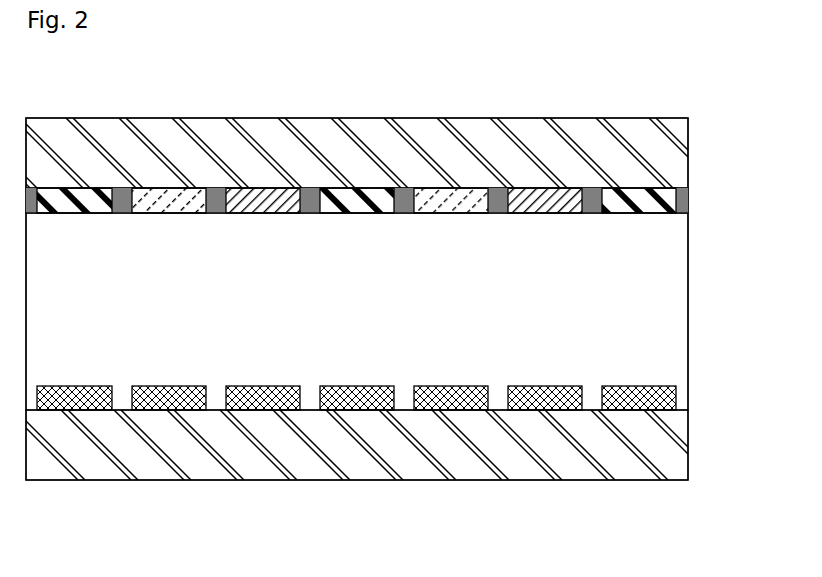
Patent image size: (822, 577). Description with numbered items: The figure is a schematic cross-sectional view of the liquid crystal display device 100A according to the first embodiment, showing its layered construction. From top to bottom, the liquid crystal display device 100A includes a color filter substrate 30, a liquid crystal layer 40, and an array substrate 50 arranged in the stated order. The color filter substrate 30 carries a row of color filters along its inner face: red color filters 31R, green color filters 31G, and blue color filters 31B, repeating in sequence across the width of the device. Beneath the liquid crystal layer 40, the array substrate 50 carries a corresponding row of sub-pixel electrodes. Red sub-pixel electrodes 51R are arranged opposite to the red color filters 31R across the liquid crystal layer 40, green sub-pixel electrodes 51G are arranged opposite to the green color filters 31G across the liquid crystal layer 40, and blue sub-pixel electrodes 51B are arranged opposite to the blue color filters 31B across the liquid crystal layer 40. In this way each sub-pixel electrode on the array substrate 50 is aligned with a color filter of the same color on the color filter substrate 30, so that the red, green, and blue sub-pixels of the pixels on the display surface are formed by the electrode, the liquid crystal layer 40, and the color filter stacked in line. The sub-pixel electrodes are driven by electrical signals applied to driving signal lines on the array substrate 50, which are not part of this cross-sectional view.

The liquid crystal display device 100A is at (784, 76).
The color filter substrate 30 is at (697, 118).
The red color filter 31R is at (68, 200).
The green color filter 31G is at (162, 200).
The blue color filter 31B is at (258, 205).
The liquid crystal layer 40 is at (670, 310).
The array substrate 50 is at (697, 386).
The red sub-pixel electrode 51R is at (78, 398).
The green sub-pixel electrode 51G is at (172, 398).
The blue sub-pixel electrode 51B is at (265, 399).